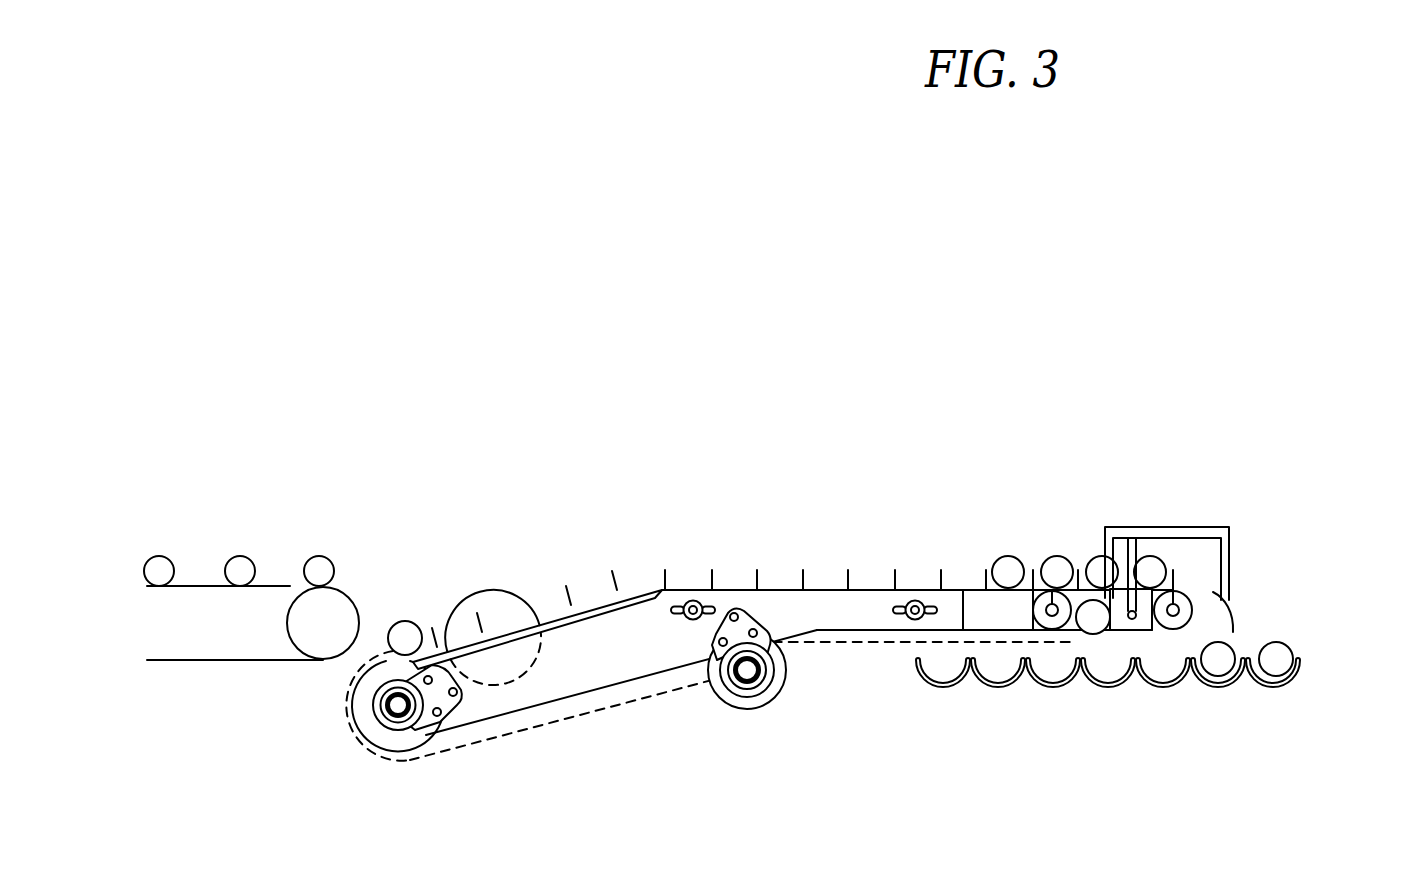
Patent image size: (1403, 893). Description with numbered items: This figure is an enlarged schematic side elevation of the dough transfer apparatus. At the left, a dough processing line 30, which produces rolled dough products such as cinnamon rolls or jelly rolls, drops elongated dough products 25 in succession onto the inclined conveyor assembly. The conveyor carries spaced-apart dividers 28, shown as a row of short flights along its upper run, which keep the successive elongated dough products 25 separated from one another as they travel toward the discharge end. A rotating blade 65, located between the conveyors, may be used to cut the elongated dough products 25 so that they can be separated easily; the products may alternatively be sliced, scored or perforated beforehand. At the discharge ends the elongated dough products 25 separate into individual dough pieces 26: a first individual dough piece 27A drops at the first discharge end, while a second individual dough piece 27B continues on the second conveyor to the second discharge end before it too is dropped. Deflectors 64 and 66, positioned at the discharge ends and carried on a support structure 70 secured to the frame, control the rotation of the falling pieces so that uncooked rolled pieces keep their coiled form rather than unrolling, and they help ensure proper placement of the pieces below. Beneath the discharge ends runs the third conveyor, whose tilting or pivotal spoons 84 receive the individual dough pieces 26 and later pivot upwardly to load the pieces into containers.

The elongated dough product 25 is at (323, 526).
The dough processing line 30 is at (252, 661).
The rotating blade 65 is at (494, 589).
The spaced-apart dividers 28 is at (665, 576).
The second individual dough piece 27B is at (1060, 553).
The first individual dough piece 27A is at (1093, 653).
The deflector 64 is at (1135, 633).
The support structure 70 is at (1150, 527).
The deflector 66 is at (1235, 622).
The tilting spoons 84 is at (1160, 687).
The individual dough pieces 26 is at (1320, 639).